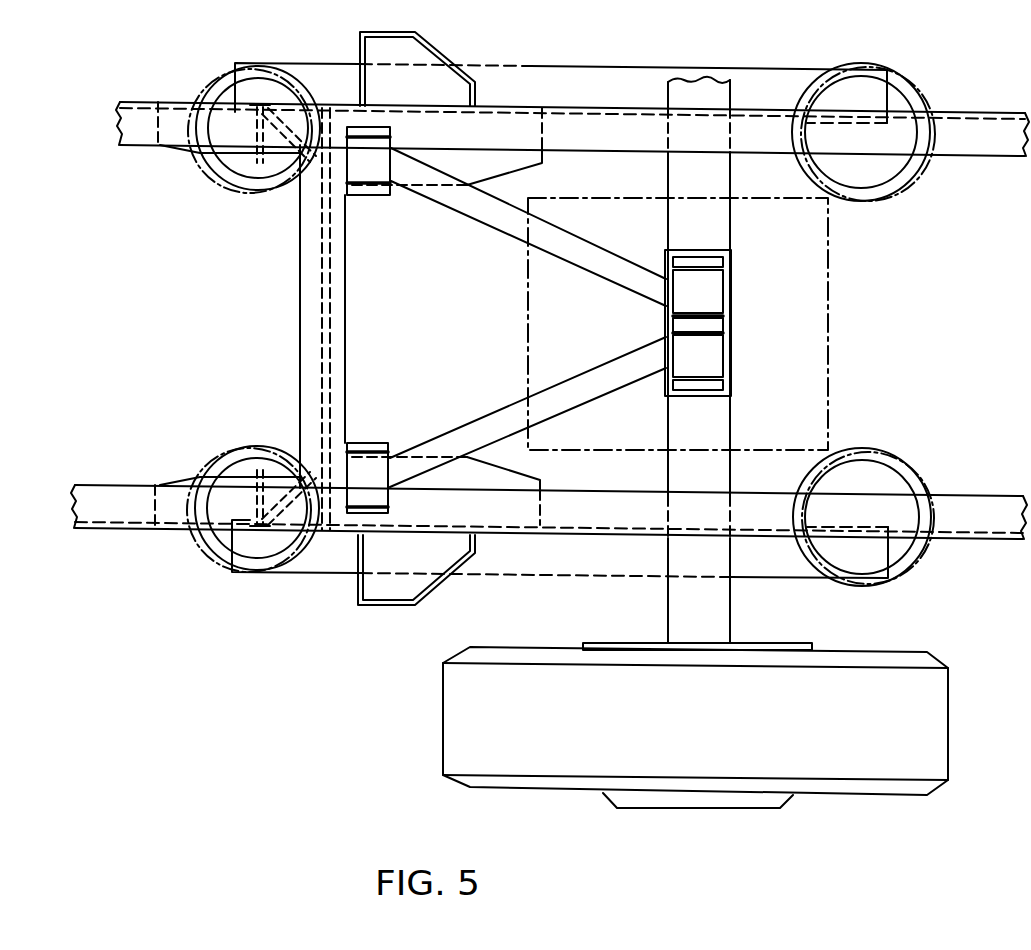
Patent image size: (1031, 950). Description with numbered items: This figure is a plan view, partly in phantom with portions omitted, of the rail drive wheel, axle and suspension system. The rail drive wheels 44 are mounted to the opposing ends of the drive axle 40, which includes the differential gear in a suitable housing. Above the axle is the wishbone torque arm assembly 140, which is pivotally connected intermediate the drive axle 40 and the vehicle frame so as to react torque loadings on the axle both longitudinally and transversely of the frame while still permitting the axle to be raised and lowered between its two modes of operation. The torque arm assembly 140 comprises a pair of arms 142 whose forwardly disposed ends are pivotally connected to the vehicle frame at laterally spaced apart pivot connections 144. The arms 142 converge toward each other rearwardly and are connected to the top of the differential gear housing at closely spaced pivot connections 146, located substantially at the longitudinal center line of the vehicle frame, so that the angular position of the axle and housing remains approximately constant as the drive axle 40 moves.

The drive axle 40 is at (712, 628).
The rail drive wheels 44 is at (923, 735).
The torque arm assembly 140 is at (515, 422).
The arms 142 is at (483, 432).
The pivot connections 144 is at (370, 168).
The pivot connections 146 is at (701, 356).